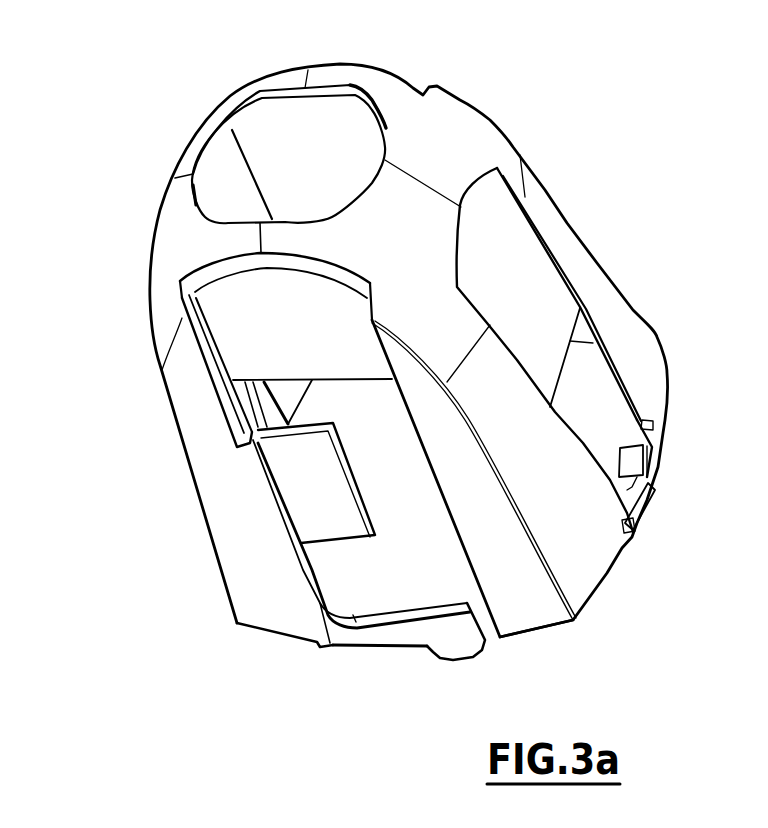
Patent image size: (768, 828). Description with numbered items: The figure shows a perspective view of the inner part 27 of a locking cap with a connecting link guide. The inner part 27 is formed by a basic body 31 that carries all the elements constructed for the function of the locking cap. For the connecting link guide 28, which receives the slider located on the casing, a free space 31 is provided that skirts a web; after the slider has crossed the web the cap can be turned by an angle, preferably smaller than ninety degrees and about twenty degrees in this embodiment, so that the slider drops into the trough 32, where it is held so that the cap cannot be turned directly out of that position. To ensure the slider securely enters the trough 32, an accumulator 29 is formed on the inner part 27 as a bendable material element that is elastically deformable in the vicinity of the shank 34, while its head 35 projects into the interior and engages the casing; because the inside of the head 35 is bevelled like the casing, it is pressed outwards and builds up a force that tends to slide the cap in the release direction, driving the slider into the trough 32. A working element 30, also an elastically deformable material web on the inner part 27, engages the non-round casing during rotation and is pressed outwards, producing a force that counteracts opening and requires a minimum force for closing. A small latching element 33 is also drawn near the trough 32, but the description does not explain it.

The inner part 27 is at (582, 209).
The connecting link guide 28 is at (673, 460).
The accumulator 29 is at (369, 609).
The working element 30 is at (323, 498).
The basic body 31 is at (477, 498).
The trough 32 is at (630, 443).
The latching lug 33 is at (650, 508).
The shank 34 is at (362, 638).
The head 35 is at (450, 628).